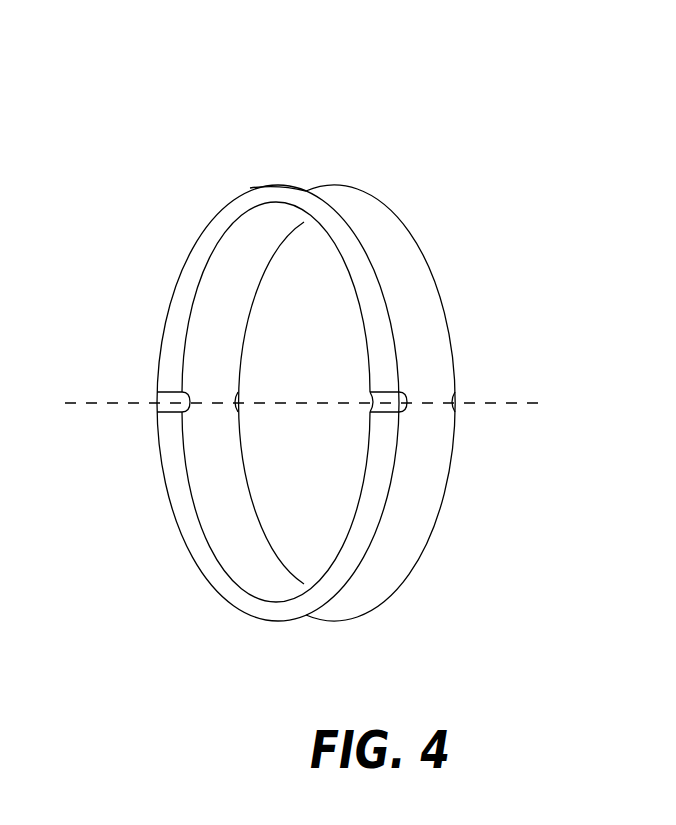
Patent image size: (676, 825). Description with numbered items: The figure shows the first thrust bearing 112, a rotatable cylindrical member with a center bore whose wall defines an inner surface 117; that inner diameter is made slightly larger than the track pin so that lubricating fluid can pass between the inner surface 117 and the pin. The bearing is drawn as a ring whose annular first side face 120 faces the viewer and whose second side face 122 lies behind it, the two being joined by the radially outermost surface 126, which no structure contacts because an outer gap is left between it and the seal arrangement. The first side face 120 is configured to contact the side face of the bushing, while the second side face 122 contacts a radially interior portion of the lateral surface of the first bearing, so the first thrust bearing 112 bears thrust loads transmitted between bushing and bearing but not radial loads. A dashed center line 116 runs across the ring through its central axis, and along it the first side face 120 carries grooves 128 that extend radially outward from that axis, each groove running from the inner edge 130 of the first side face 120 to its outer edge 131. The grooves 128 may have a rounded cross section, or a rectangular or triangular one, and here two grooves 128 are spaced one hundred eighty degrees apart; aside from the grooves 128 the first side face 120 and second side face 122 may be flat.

The first thrust bearing 112 is at (162, 97).
The central axis 116 is at (314, 432).
The inner surface 117 is at (222, 280).
The first side face 120 is at (283, 203).
The second side face 122 is at (418, 246).
The radially outermost surface 126 is at (317, 187).
The grooves 128 is at (160, 388).
The inner edge 130 is at (363, 342).
The outer edge 131 is at (393, 327).